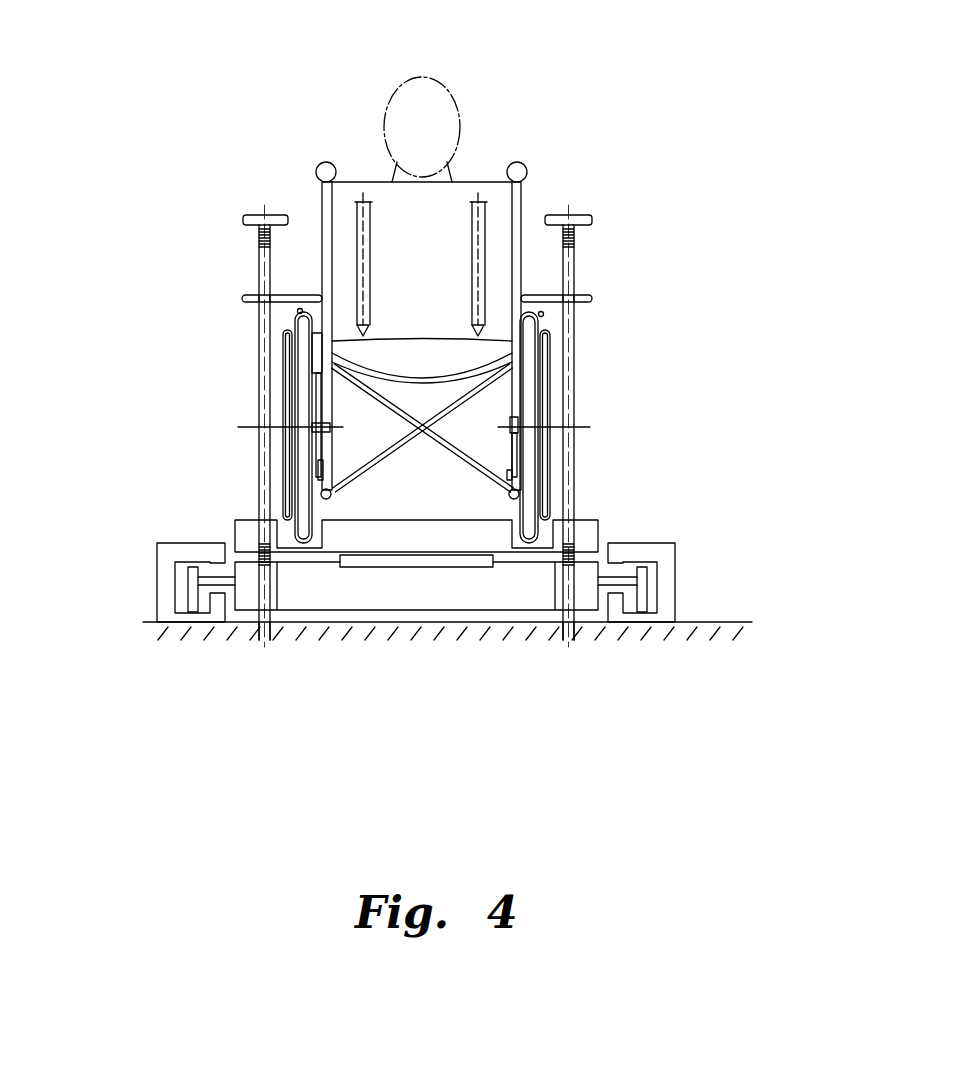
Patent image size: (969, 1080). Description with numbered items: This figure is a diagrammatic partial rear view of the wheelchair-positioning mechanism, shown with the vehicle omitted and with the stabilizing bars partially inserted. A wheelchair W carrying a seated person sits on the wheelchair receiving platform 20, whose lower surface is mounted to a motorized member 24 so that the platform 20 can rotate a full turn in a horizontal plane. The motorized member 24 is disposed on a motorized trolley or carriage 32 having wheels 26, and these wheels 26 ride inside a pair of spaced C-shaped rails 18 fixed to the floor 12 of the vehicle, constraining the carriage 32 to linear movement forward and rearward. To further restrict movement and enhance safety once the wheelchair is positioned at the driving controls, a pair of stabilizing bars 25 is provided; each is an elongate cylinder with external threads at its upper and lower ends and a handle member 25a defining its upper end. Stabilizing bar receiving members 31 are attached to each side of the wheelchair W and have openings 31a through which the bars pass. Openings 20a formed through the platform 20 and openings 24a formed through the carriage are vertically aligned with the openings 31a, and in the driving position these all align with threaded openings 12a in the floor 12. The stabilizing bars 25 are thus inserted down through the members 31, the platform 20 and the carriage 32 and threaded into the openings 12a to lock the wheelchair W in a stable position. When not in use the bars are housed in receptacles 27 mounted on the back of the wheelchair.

The wheelchair W is at (518, 163).
The receptacles 27 is at (357, 213).
The handle member 25a is at (243, 220).
The stabilizing bars 25 is at (259, 257).
The openings 31a is at (259, 292).
The stabilizing bar receiving members 31 is at (243, 299).
The wheelchair receiving platform 20 is at (413, 520).
The openings 20a is at (262, 520).
The motorized member 24 is at (423, 577).
The openings 24a is at (272, 582).
The motorized trolley or carriage 32 is at (453, 590).
The C-shaped rails 18 is at (167, 550).
The wheels 26 is at (193, 565).
The floor 12 is at (707, 621).
The threaded openings 12a is at (270, 637).